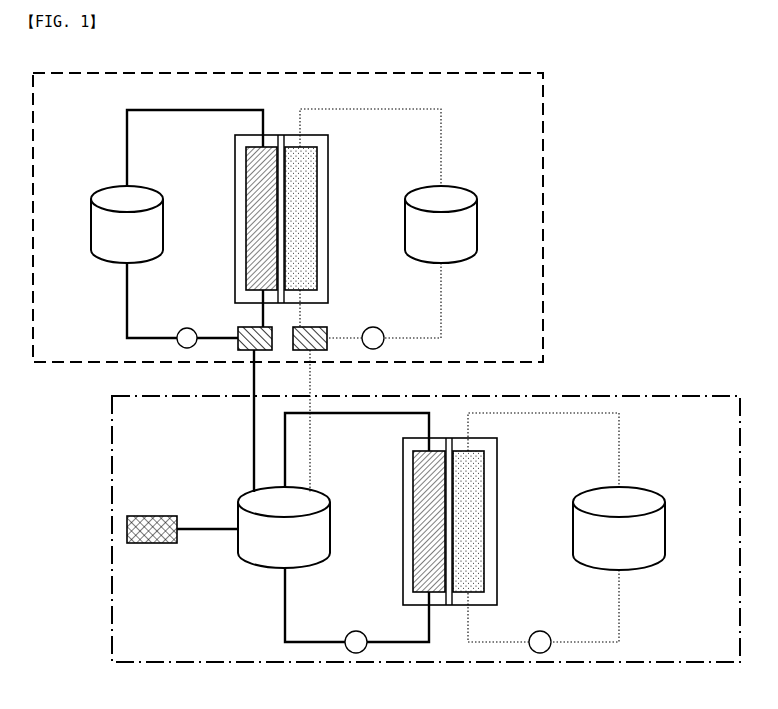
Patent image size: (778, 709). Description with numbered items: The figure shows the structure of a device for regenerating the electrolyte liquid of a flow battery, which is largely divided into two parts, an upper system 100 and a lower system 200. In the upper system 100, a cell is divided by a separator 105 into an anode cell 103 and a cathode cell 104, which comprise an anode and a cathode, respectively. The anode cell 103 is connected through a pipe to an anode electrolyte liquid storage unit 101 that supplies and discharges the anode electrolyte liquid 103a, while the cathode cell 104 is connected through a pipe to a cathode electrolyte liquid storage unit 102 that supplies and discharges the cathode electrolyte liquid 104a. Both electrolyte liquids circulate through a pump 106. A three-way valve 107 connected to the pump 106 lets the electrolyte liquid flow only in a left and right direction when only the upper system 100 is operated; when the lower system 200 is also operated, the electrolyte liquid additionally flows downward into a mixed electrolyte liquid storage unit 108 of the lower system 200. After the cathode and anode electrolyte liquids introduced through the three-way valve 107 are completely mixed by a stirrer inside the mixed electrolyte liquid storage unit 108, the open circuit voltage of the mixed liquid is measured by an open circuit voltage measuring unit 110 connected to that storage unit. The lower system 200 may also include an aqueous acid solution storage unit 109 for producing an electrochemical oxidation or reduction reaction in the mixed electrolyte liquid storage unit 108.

The upper system 100 is at (543, 140).
The anode electrolyte liquid storage unit 101 is at (104, 232).
The cathode electrolyte liquid storage unit 102 is at (457, 237).
The anode cell 103 is at (234, 160).
The anode electrolyte liquid 103a is at (262, 235).
The cathode cell 104 is at (328, 170).
The cathode electrolyte liquid 104a is at (305, 232).
The separator 105 is at (281, 135).
The pump 106 is at (186, 340).
The three-way valve 107 is at (327, 327).
The mixed electrolyte liquid storage unit 108 is at (260, 548).
The aqueous acid solution storage unit 109 is at (640, 535).
The open circuit voltage measuring unit 110 is at (165, 514).
The lower system 200 is at (585, 397).